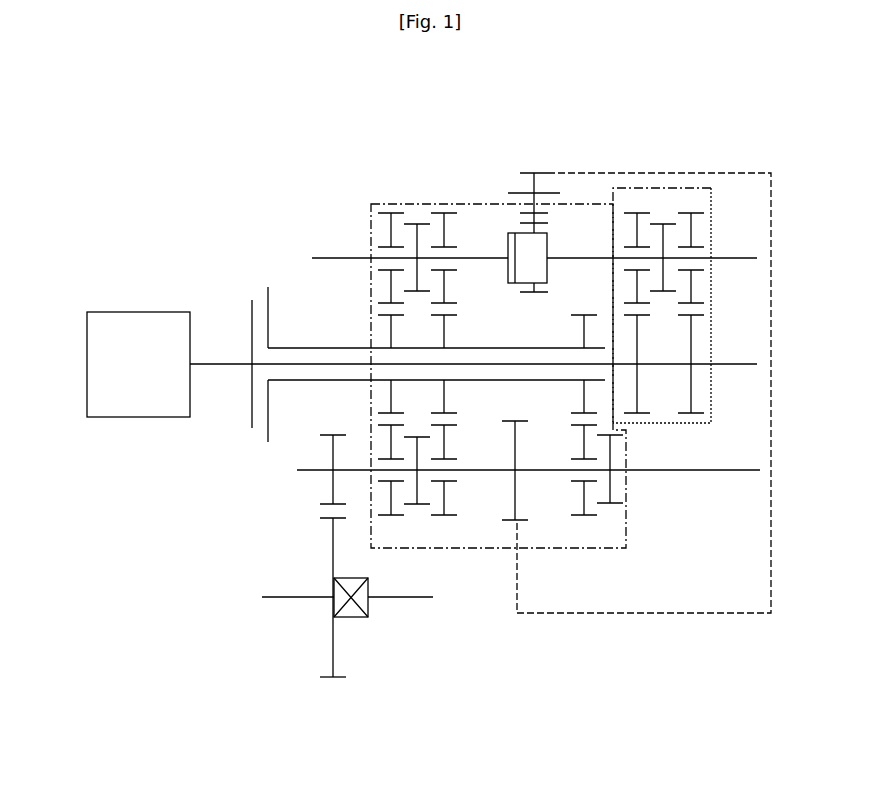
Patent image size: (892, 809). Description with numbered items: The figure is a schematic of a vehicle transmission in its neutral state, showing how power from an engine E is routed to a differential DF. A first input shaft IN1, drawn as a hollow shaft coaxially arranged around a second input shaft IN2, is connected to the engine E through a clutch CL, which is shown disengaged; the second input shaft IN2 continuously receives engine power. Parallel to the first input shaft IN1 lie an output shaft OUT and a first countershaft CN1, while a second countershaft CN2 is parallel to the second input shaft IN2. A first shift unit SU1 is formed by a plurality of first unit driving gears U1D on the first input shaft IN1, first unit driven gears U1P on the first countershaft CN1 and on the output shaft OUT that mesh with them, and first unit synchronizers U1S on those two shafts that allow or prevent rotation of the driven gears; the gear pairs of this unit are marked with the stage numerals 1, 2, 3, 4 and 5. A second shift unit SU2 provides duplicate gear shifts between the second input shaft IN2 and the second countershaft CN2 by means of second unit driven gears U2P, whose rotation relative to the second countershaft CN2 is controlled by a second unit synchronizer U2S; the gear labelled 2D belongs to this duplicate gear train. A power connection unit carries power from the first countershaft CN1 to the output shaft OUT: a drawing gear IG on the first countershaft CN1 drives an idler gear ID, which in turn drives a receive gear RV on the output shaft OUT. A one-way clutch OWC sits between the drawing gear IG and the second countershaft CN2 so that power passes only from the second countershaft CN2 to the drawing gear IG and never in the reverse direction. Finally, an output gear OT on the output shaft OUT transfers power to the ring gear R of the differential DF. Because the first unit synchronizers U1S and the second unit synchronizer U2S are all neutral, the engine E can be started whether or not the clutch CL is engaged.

The engine E is at (140, 312).
The clutch CL is at (253, 287).
The first input shaft IN1 is at (600, 348).
The second input shaft IN2 is at (740, 367).
The first countershaft CN1 is at (328, 257).
The second countershaft CN2 is at (740, 257).
The first unit driven gears U1P is at (395, 207).
The first unit synchronizers U1S is at (422, 222).
The first unit driving gears U1D is at (442, 412).
The first shift unit SU1 is at (378, 197).
The second shift unit SU2 is at (668, 222).
The second unit driven gears U2P is at (637, 213).
The second unit synchronizer U2S is at (664, 291).
The idler gear ID is at (534, 172).
The drawing gear IG is at (546, 222).
The one-way clutch OWC is at (548, 248).
The second driven gear 2D is at (637, 415).
The output gear OT is at (330, 435).
The output shaft OUT is at (717, 473).
The receive gear RV is at (515, 530).
The differential DF is at (326, 588).
The ring gear R is at (334, 680).
The first speed gear pair 1 is at (514, 216).
The second speed gear pair 2 is at (567, 216).
The third speed gear pair 3 is at (584, 512).
The fourth speed gear pair 4 is at (444, 512).
The fifth speed gear pair 5 is at (391, 512).